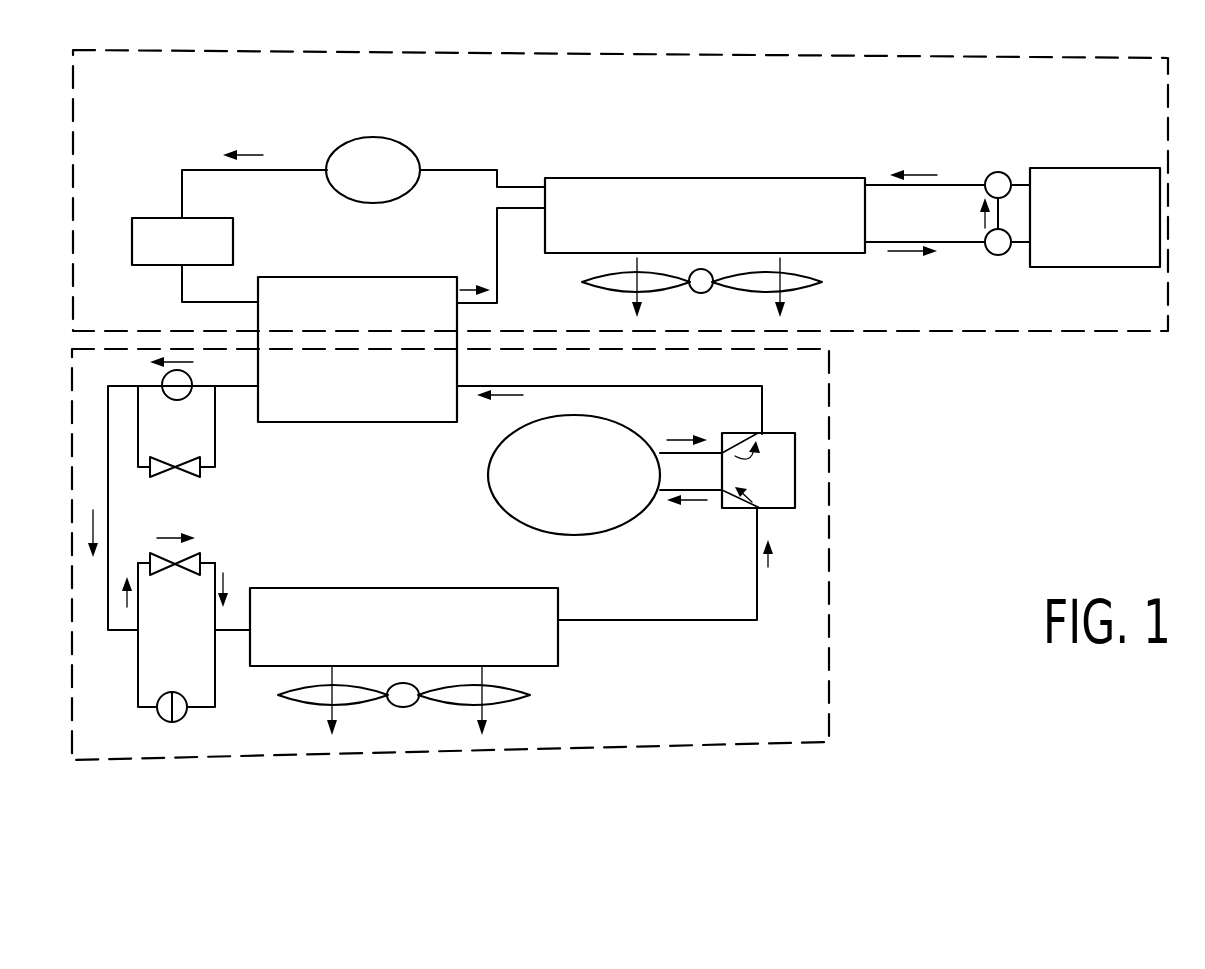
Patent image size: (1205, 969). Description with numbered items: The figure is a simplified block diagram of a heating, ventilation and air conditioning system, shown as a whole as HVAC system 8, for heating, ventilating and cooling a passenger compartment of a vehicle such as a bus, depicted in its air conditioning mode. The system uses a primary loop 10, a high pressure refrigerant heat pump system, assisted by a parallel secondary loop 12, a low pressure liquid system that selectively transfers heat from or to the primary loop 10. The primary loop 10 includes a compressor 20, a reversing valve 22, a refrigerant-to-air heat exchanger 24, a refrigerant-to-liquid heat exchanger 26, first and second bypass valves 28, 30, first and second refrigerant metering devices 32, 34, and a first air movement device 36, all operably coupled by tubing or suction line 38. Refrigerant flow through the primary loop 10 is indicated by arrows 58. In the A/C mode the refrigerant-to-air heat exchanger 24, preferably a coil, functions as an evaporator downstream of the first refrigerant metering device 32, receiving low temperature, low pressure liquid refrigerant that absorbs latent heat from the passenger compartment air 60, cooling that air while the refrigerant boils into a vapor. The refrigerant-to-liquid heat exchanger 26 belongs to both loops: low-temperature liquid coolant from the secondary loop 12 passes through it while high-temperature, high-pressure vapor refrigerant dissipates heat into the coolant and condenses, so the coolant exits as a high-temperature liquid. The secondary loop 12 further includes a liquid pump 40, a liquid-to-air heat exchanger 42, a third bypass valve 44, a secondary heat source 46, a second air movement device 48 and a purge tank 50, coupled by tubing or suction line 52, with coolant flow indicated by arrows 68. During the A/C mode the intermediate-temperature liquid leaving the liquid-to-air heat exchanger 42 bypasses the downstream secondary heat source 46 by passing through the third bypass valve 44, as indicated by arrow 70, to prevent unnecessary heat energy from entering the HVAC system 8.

The HVAC system 8 is at (886, 472).
The primary loop 10 is at (830, 585).
The secondary loop 12 is at (588, 57).
The compressor 20 is at (613, 535).
The reversing valve 22 is at (795, 475).
The refrigerant-to-air heat exchanger 24 is at (485, 587).
The refrigerant-to-liquid heat exchanger 26 is at (305, 423).
The first bypass valve 28 is at (162, 383).
The second bypass valve 30 is at (188, 712).
The first refrigerant metering device 32 is at (195, 555).
The second refrigerant metering device 34 is at (187, 478).
The first air movement device 36 is at (517, 693).
The tubing or suction line 38 is at (660, 634).
The liquid pump 40 is at (420, 155).
The liquid-to-air heat exchanger 42 is at (768, 178).
The third bypass valve 44 is at (1010, 168).
The secondary heat source 46 is at (1078, 168).
The second air movement device 48 is at (805, 290).
The purge tank 50 is at (157, 218).
The tubing or suction line 52 is at (306, 165).
The arrows 58 is at (193, 363).
The air 60 is at (353, 705).
The arrows 68 is at (262, 155).
The arrow 70 is at (983, 212).